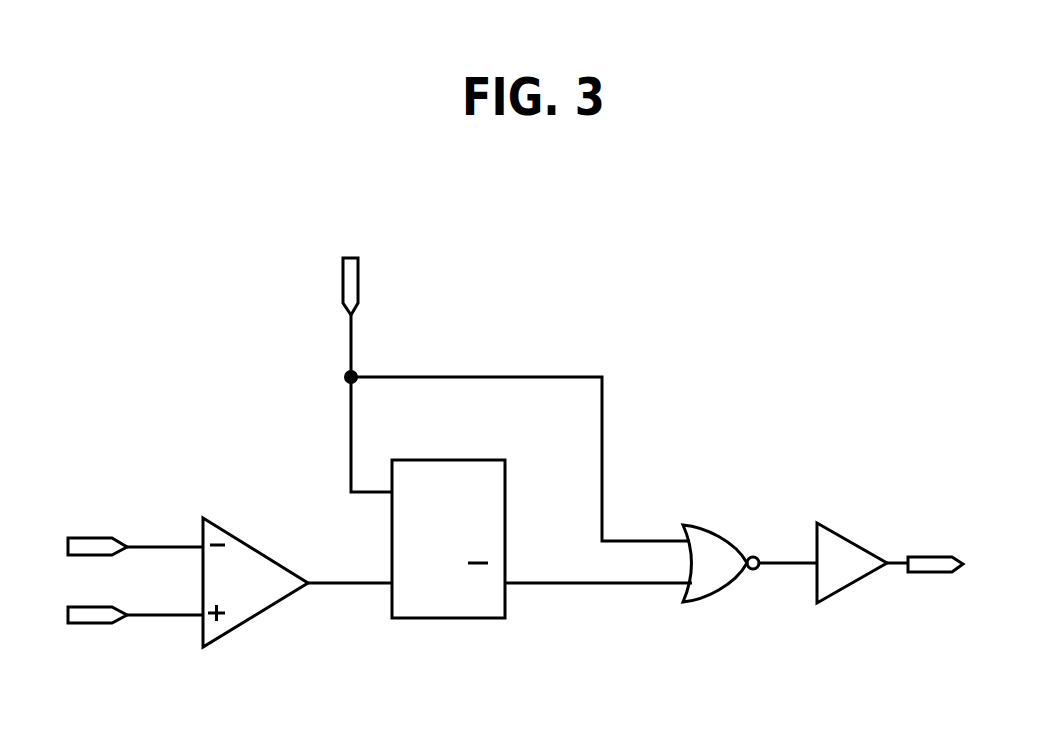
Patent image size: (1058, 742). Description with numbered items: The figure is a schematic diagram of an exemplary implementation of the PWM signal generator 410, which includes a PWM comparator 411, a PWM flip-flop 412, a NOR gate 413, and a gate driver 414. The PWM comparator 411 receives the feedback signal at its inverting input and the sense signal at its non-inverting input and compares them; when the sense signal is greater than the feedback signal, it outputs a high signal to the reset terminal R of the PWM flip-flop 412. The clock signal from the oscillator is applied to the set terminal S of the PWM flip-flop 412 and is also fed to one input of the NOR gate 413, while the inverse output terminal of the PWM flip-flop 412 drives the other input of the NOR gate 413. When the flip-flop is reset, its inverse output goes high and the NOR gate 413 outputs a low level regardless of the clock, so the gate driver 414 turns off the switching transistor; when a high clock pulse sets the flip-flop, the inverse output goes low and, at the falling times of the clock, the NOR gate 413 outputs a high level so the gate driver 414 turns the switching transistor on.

The PWM signal generator 410 is at (852, 342).
The PWM comparator 411 is at (250, 545).
The PWM flip-flop 412 is at (467, 460).
The NOR gate 413 is at (703, 527).
The gate driver 414 is at (838, 533).